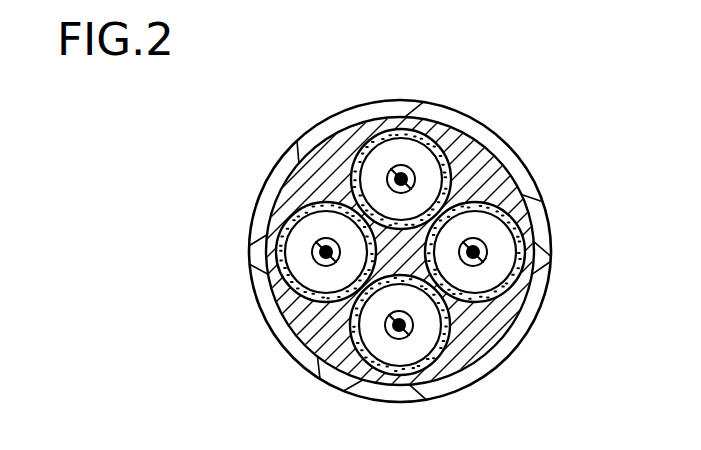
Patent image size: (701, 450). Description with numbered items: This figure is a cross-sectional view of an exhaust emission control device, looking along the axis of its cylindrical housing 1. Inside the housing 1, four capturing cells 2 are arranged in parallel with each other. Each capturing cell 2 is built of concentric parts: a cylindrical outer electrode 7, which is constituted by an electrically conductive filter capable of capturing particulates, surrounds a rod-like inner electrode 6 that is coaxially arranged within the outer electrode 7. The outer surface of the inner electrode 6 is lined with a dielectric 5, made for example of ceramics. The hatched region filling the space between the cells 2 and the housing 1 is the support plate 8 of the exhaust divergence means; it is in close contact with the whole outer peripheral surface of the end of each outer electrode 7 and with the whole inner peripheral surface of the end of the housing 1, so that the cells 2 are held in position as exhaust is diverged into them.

The cylindrical housing 1 is at (503, 141).
The capturing cell 2 is at (397, 254).
The dielectric 5 is at (313, 250).
The inner electrode 6 is at (322, 257).
The outer electrode 7 is at (290, 287).
The support plate 8 is at (465, 337).